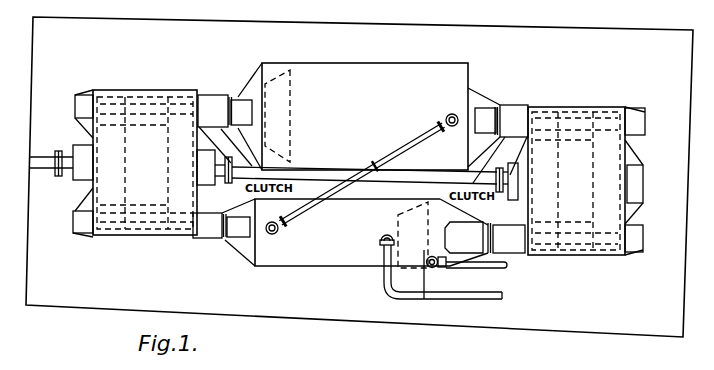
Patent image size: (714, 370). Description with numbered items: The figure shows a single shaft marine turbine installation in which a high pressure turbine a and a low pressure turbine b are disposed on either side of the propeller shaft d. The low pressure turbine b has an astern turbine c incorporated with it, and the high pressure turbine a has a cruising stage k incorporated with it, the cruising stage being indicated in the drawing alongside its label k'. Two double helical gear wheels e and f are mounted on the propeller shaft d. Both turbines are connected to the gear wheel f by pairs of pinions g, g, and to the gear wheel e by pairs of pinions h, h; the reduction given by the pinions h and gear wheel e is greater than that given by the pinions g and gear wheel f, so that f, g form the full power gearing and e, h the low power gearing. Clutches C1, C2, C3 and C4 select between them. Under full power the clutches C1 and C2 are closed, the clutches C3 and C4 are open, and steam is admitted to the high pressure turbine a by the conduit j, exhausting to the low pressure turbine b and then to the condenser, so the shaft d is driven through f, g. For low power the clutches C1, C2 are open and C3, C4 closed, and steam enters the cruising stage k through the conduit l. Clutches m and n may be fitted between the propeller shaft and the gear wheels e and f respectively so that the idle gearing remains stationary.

The high pressure turbine a is at (371, 233).
The low pressure turbine b is at (369, 116).
The astern turbine c is at (277, 116).
The propeller shaft d is at (41, 163).
The double helical gear wheel e is at (135, 163).
The double helical gear wheel f is at (586, 181).
The pinions g is at (608, 117).
The pinions h is at (188, 105).
The conduit j is at (480, 297).
The cruising stage k is at (441, 281).
The pipe connection k' is at (387, 274).
The conduit l is at (505, 268).
The clutch m is at (206, 180).
The clutch n is at (512, 186).
The clutch C1 is at (506, 238).
The clutch C2 is at (500, 144).
The clutch C3 is at (224, 232).
The clutch C4 is at (225, 130).